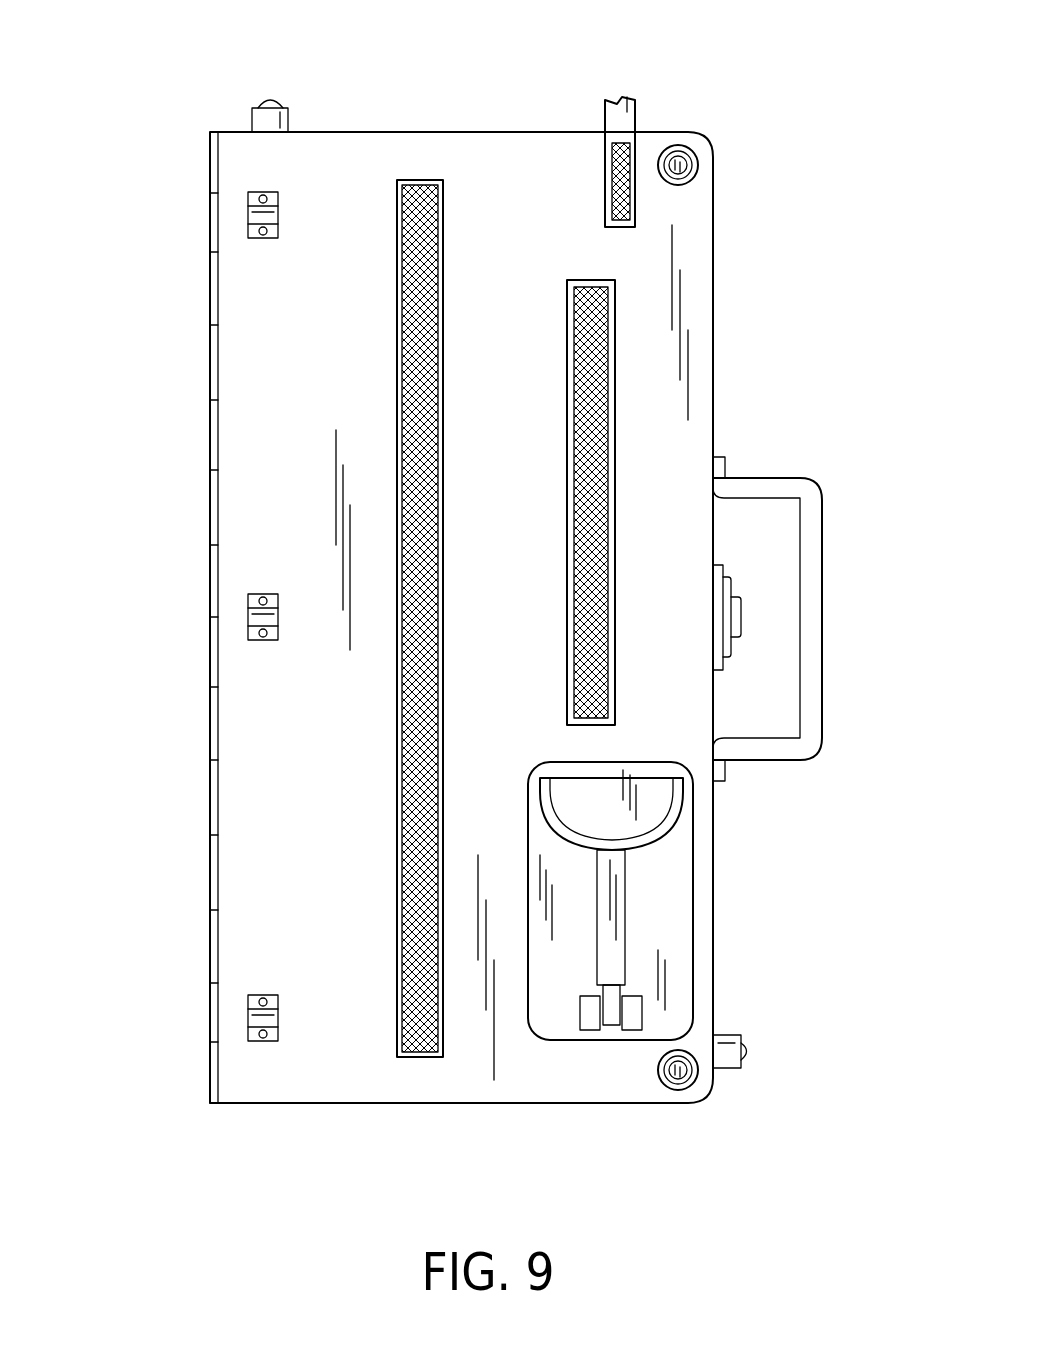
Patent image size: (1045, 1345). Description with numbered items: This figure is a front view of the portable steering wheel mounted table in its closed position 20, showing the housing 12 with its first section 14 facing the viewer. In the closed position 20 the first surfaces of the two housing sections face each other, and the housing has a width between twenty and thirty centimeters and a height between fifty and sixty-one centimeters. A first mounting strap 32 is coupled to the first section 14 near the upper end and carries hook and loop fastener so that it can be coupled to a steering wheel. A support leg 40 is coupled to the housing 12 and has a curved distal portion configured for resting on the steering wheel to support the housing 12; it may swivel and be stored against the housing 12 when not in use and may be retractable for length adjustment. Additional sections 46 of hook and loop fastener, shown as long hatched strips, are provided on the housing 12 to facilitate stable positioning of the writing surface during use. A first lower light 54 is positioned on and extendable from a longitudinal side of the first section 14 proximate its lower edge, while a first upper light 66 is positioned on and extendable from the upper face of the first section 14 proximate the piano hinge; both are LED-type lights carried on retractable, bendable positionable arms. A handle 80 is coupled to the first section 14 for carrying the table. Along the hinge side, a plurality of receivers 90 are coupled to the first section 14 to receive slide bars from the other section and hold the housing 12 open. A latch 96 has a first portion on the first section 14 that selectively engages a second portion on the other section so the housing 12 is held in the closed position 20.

The housing 12 is at (208, 648).
The first section 14 is at (563, 130).
The closed position 20 is at (175, 993).
The first mounting strap 32 is at (620, 104).
The support leg 40 is at (620, 945).
The section of hook and loop fastener 46 is at (430, 190).
The first lower light 54 is at (728, 1068).
The first upper light 66 is at (258, 108).
The handle 80 is at (770, 478).
The receiver 90 is at (250, 213).
The latch 96 is at (730, 618).